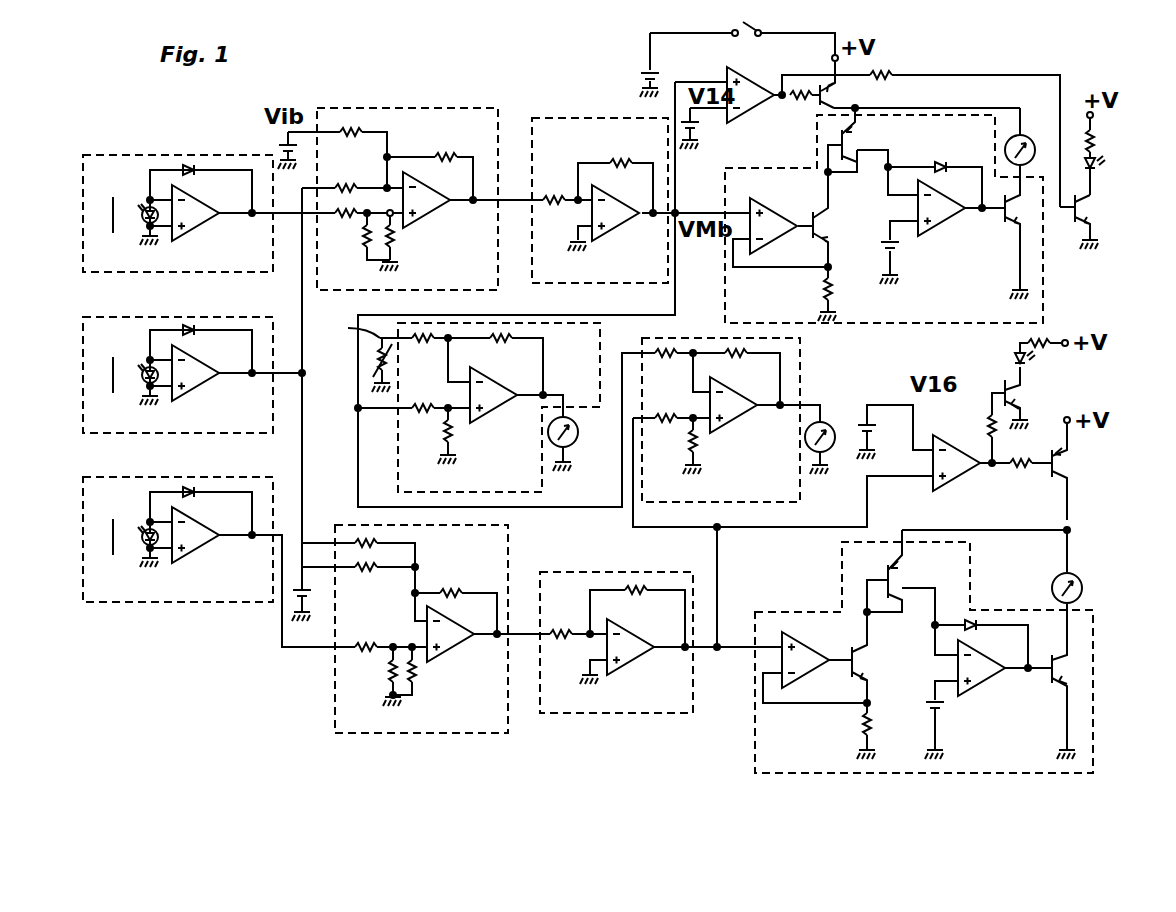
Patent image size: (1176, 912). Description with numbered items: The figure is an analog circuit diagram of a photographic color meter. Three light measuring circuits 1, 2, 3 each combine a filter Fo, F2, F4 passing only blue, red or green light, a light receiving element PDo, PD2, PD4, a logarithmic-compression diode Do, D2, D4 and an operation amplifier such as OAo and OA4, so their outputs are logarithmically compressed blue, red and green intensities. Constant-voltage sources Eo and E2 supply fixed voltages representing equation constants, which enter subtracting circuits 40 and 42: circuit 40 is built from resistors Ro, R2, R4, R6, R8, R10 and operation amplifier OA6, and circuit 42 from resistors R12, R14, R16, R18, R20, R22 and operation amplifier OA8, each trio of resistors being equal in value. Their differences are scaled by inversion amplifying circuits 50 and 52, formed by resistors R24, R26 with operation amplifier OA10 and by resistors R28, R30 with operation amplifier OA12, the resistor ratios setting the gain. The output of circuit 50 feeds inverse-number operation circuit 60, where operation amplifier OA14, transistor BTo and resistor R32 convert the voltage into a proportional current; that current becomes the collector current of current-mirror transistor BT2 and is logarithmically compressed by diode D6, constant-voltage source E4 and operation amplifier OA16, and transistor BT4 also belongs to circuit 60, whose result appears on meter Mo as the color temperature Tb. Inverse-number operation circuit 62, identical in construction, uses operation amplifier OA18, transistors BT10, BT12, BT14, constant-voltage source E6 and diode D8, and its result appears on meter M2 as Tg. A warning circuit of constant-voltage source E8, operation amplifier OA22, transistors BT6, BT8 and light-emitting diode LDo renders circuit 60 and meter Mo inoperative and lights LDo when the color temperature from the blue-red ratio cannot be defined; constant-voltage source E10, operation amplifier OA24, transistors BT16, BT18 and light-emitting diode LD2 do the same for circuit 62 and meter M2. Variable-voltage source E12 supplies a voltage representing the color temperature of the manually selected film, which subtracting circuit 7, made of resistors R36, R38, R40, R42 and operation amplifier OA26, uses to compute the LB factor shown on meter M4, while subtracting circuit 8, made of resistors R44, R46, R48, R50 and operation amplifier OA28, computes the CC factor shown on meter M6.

The light measuring circuit for the blue region 1 is at (150, 155).
The light measuring circuit for the red region 2 is at (150, 341).
The light measuring circuit for the green region 3 is at (150, 501).
The subtracting circuit 40 is at (416, 112).
The inversion amplifying circuit 50 is at (574, 116).
The inverse-number operation circuit 60 is at (1046, 307).
The subtracting circuit for calculating the LB factor 7 is at (594, 348).
The subtracting circuit for calculating the CC factor 8 is at (800, 352).
The subtracting circuit 42 is at (325, 712).
The inversion amplifying circuit 52 is at (612, 704).
The inverse-number operation circuit 62 is at (756, 751).
The filter Fo is at (107, 201).
The filter F2 is at (108, 361).
The filter F4 is at (108, 523).
The light receiving element PDo is at (122, 218).
The light receiving element PD2 is at (122, 378).
The light receiving element PD4 is at (122, 543).
The operation amplifier OAo is at (210, 218).
The operation amplifier OA4 is at (210, 546).
The operation amplifier OA6 is at (450, 204).
The operation amplifier OA10 is at (628, 222).
The operation amplifier OA14 is at (770, 212).
The operation amplifier OA16 is at (968, 226).
The operation amplifier OA22 is at (760, 82).
The operation amplifier OA26 is at (512, 424).
The operation amplifier OA28 is at (740, 420).
The operation amplifier OA24 is at (962, 462).
The operation amplifier OA8 is at (466, 646).
The operation amplifier OA12 is at (627, 656).
The operation amplifier OA18 is at (811, 683).
The diode for logarithmic compression Do is at (207, 182).
The diode for logarithmic compression D2 is at (207, 342).
The diode for logarithmic compression D4 is at (207, 504).
The diode D6 is at (942, 167).
The diode D8 is at (976, 623).
The constant-voltage source Eo is at (280, 150).
The constant-voltage source E2 is at (298, 596).
The constant-voltage source E4 is at (907, 263).
The constant-voltage source E6 is at (942, 704).
The constant-voltage source E8 is at (704, 135).
The constant-voltage source E10 is at (889, 439).
The variable-voltage source E12 is at (370, 370).
The resistor Ro is at (352, 125).
The resistor R2 is at (338, 175).
The resistor R4 is at (440, 145).
The resistor R6 is at (336, 225).
The resistor R8 is at (343, 246).
The resistor R10 is at (418, 248).
The resistor R12 is at (384, 544).
The resistor R14 is at (374, 568).
The resistor R16 is at (444, 592).
The resistor R18 is at (358, 642).
The resistor R20 is at (390, 670).
The resistor R22 is at (422, 676).
The resistor R24 is at (560, 182).
The resistor R26 is at (627, 150).
The resistor R28 is at (562, 625).
The resistor R30 is at (638, 586).
The resistor R32 is at (822, 290).
The resistor R36 is at (422, 352).
The resistor R38 is at (510, 352).
The resistor R40 is at (422, 430).
The resistor R42 is at (476, 438).
The resistor R44 is at (667, 368).
The resistor R46 is at (750, 368).
The resistor R48 is at (667, 431).
The resistor R50 is at (718, 456).
The transistor BTo is at (816, 230).
The transistor BT2 is at (848, 136).
The transistor BT4 is at (1020, 210).
The transistor BT6 is at (845, 96).
The transistor BT8 is at (1092, 206).
The transistor BT10 is at (852, 654).
The transistor BT12 is at (894, 572).
The transistor BT14 is at (1070, 668).
The transistor BT16 is at (1069, 462).
The transistor BT18 is at (1028, 392).
The light-emitting diode LDo is at (1094, 161).
The light-emitting diode LD2 is at (1028, 358).
The meter Mo is at (1036, 120).
The meter M2 is at (1080, 564).
The meter M4 is at (576, 440).
The meter M6 is at (828, 458).